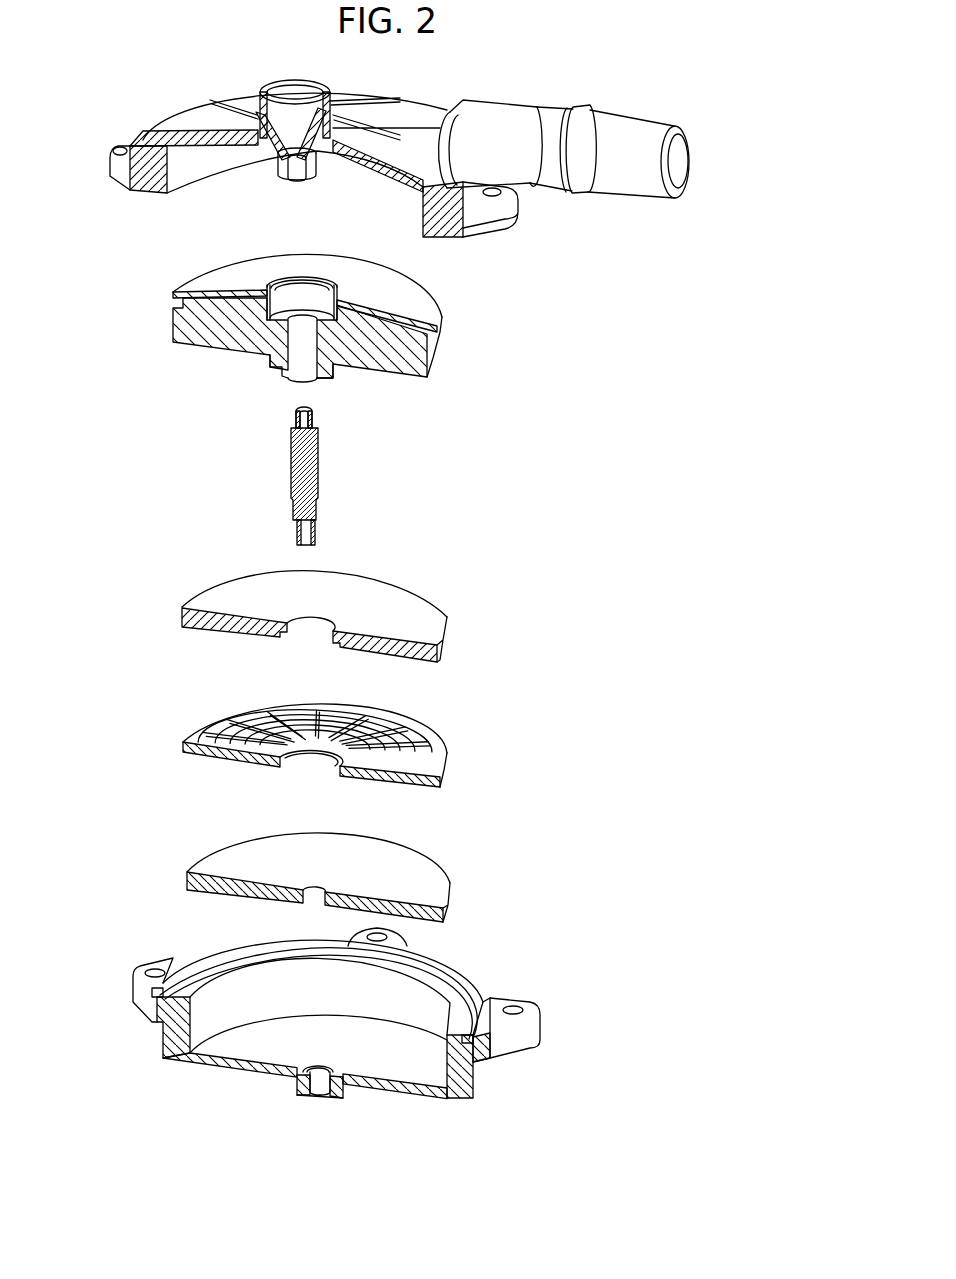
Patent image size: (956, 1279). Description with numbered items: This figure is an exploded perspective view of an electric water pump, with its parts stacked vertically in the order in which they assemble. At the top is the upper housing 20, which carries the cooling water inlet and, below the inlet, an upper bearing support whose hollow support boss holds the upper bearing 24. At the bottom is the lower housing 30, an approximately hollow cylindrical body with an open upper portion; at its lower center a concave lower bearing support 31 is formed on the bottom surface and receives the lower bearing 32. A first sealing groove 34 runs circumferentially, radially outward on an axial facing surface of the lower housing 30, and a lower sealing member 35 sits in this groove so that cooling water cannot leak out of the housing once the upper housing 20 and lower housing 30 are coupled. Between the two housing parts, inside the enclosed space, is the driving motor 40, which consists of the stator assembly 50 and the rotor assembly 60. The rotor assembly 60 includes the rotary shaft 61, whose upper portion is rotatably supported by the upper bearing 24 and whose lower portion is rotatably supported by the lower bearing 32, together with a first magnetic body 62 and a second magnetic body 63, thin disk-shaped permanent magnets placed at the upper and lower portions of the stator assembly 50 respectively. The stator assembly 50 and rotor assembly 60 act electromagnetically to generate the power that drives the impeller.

The upper housing 20 is at (138, 110).
The upper bearing 24 is at (313, 417).
The lower housing 30 is at (128, 962).
The lower bearing support 31 is at (343, 1098).
The lower bearing 32 is at (315, 527).
The first sealing groove 34 is at (492, 1068).
The lower sealing member 35 is at (476, 1002).
The driving motor 40 is at (594, 551).
The stator assembly 50 is at (183, 733).
The rotor assembly 60 is at (594, 692).
The rotary shaft 61 is at (270, 468).
The first magnetic body 62 is at (181, 596).
The second magnetic body 63 is at (184, 860).